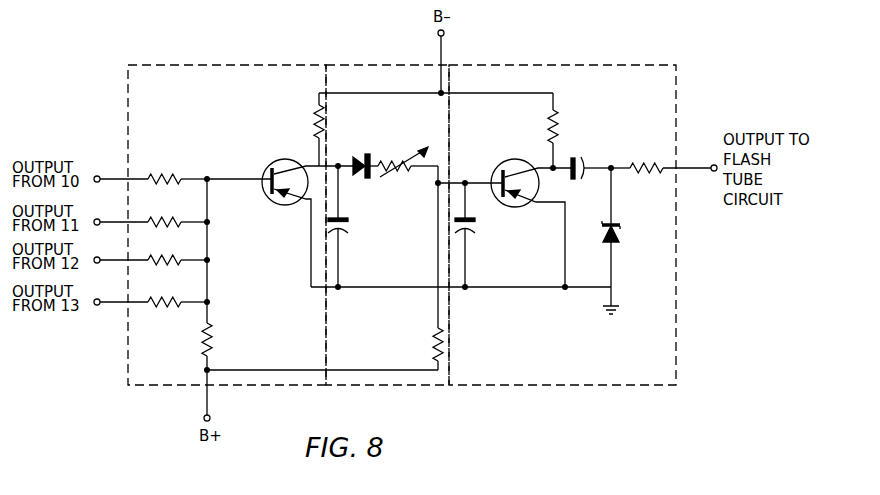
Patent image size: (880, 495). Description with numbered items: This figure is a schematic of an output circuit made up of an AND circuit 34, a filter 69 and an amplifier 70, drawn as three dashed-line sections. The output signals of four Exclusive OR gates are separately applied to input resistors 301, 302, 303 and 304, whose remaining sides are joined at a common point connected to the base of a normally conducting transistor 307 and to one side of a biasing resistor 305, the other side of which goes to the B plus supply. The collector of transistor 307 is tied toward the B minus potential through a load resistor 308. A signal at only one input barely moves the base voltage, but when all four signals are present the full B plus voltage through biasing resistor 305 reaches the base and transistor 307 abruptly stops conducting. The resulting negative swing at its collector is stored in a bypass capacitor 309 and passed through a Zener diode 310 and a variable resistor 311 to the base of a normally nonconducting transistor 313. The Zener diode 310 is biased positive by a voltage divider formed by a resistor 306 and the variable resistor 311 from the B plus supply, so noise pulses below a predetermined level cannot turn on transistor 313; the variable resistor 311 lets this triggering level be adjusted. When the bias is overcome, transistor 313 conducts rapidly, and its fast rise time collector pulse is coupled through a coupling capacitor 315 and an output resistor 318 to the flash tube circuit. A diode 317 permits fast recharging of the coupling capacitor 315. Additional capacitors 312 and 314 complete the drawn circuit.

The AND circuit 34 is at (227, 225).
The filter 69 is at (387, 225).
The amplifier 70 is at (562, 225).
The input resistor 301 is at (176, 178).
The input resistor 302 is at (175, 224).
The input resistor 303 is at (181, 260).
The input resistor 304 is at (181, 302).
The biasing resistor 305 is at (204, 350).
The resistor 306 is at (445, 343).
The transistor 307 is at (270, 208).
The load resistor 308 is at (325, 114).
The bypass capacitor 309 is at (347, 231).
The Zener diode 310 is at (360, 154).
The variable resistor 311 is at (395, 172).
The capacitor 312 is at (477, 230).
The transistor 313 is at (536, 204).
The 1K resistor 314 is at (559, 116).
The coupling capacitor 315 is at (584, 176).
The diode 317 is at (619, 232).
The output resistor 318 is at (643, 172).